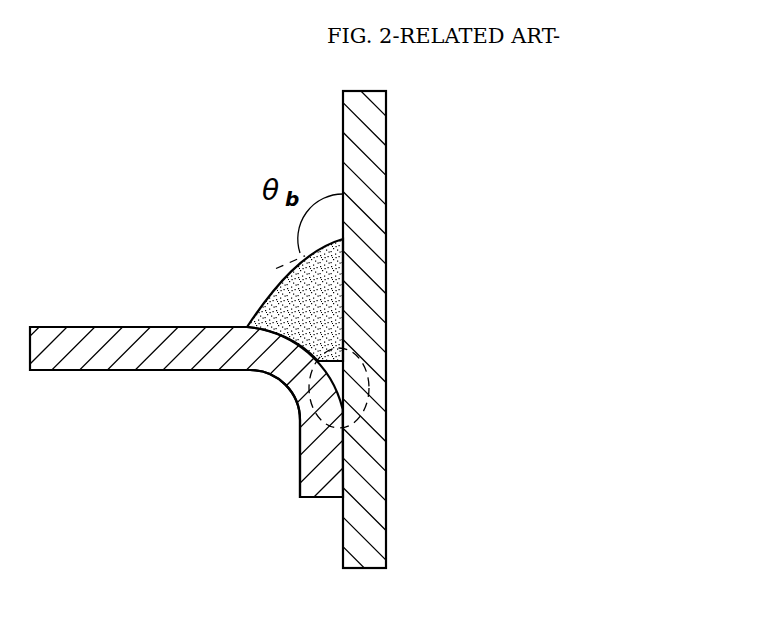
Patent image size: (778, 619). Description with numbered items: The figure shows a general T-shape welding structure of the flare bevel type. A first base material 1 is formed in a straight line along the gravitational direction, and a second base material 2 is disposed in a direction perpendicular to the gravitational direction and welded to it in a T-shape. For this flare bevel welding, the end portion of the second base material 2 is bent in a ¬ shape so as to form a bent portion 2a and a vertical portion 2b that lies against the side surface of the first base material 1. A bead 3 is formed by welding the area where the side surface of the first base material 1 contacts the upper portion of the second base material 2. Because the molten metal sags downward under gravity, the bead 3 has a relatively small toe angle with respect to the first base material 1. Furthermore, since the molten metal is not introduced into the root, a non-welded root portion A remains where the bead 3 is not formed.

The first base material 1 is at (373, 419).
The second base material 2 is at (70, 358).
The bent portion 2a is at (300, 390).
The vertical portion 2b is at (307, 460).
The bead 3 is at (276, 300).
The non-welded root portion A is at (386, 369).